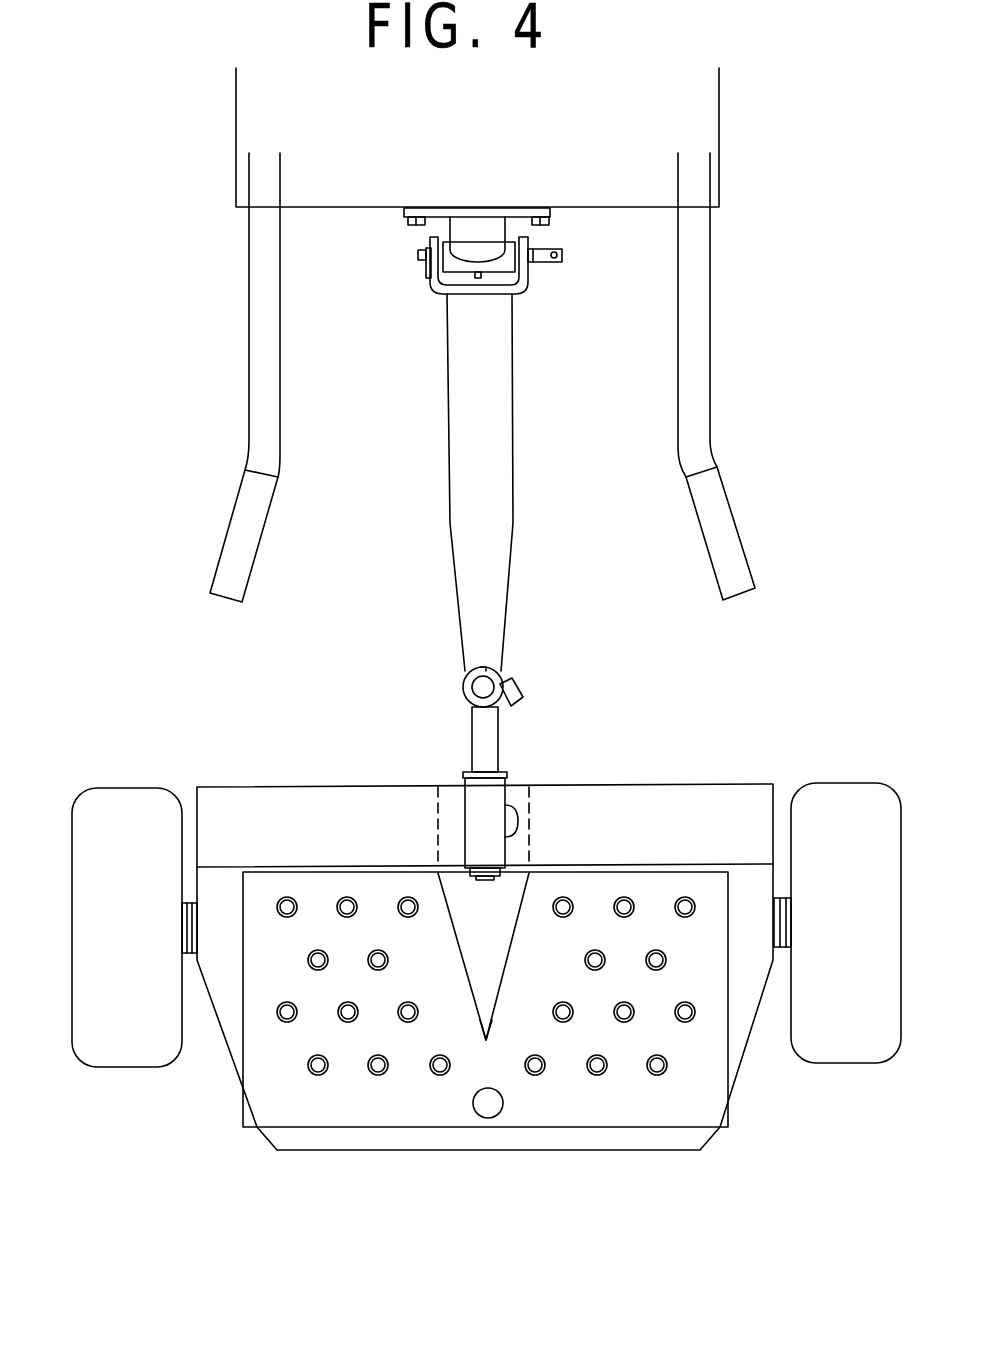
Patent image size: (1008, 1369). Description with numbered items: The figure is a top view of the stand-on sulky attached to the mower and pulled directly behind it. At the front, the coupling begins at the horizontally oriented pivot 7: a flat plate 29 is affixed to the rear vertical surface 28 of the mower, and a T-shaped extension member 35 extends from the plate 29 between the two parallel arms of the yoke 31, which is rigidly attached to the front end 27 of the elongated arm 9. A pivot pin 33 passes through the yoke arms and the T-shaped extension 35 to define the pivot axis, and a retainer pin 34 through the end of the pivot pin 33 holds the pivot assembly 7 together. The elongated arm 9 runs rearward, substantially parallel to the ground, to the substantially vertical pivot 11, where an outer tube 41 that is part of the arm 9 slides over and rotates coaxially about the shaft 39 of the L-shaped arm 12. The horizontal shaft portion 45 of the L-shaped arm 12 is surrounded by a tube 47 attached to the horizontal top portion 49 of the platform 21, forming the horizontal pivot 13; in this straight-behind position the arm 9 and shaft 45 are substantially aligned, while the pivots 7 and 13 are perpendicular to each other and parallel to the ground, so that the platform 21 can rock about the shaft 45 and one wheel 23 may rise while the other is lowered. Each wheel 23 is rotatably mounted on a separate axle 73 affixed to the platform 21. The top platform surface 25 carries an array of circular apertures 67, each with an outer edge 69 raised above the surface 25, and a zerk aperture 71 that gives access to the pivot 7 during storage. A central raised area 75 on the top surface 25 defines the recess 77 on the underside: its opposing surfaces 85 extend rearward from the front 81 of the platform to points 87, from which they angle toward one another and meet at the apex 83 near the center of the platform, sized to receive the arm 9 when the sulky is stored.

The horizontally oriented pivot 7 is at (459, 245).
The elongated arm 9 is at (480, 472).
The vertical pivot 11 is at (460, 663).
The L-shaped arm 12 is at (478, 736).
The horizontal pivot 13 is at (487, 737).
The platform 21 is at (288, 1102).
The wheel 23 is at (140, 805).
The top platform surface 25 is at (450, 960).
The front end 27 is at (448, 482).
The rear vertical surface 28 is at (305, 210).
The flat plate 29 is at (520, 210).
The yoke 31 is at (440, 285).
The pivot pin 33 is at (547, 257).
The retainer pin 34 is at (422, 276).
The T-shaped extension member 35 is at (463, 262).
The shaft 39 is at (463, 698).
The outer tube 41 is at (468, 676).
The horizontal shaft portion 45 is at (482, 763).
The tube 47 is at (467, 864).
The horizontal top portion 49 is at (245, 522).
The circular aperture 67 is at (287, 1012).
The outer edge 69 is at (377, 1073).
The aperture 71 is at (487, 1107).
The axle 73 is at (187, 927).
The central raised area 75 is at (470, 933).
The recess 77 is at (532, 813).
The front of the platform 81 is at (469, 804).
The apex 83 is at (486, 1043).
The opposing surfaces 85 is at (438, 790).
The points 87 is at (430, 878).